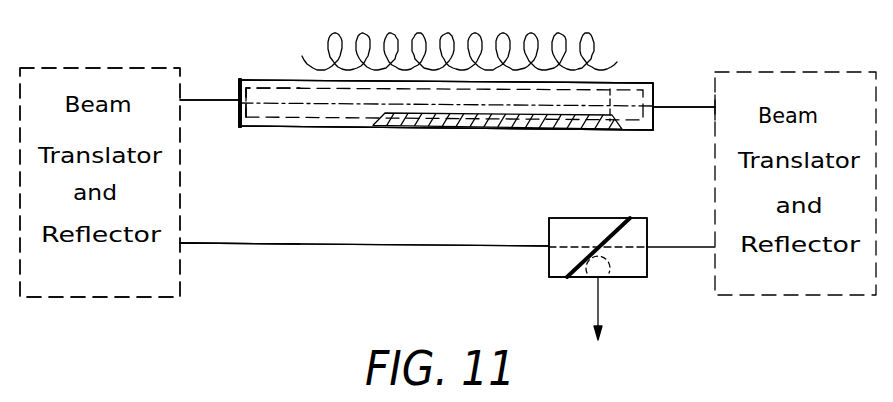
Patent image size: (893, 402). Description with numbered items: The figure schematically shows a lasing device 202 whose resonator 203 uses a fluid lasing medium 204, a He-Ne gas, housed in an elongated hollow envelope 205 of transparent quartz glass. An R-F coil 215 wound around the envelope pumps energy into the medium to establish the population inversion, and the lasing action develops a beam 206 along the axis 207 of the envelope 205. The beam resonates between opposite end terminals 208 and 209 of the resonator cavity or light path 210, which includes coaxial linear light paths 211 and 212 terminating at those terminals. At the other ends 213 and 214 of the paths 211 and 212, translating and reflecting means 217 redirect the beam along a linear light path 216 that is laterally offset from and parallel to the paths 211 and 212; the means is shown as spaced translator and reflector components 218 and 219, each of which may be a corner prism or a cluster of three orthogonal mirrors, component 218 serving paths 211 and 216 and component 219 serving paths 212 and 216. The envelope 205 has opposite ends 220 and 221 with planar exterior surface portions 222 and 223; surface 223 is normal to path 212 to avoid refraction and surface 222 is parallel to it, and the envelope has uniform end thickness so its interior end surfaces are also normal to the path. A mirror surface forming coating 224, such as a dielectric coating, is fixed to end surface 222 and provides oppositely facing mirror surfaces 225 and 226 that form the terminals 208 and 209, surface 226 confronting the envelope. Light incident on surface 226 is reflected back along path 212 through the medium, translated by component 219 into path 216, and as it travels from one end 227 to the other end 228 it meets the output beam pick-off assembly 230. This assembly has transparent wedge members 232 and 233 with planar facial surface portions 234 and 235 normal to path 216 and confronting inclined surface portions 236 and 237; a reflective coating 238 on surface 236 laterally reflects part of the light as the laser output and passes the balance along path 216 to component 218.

The lasing device 202 is at (758, 30).
The resonator 203 is at (678, 54).
The fluid lasing medium 204 is at (500, 126).
The elongated hollow envelope 205 is at (336, 128).
The beam 206 is at (665, 110).
The axis of the envelope 207 is at (610, 96).
The end terminal 208 is at (238, 122).
The end terminal 209 is at (444, 103).
The resonator cavity or light path 210 is at (380, 244).
The linear light path 211 is at (190, 100).
The linear light path 212 is at (710, 110).
The other end of light path 213 is at (181, 98).
The other end of light path 214 is at (717, 106).
The R-F coil 215 is at (498, 38).
The linear light path 216 is at (287, 244).
The translating and reflecting means 217 is at (90, 297).
The translator and reflector component 218 is at (42, 68).
The translator and reflector component 219 is at (806, 72).
The envelope end 220 is at (244, 124).
The envelope end 221 is at (653, 132).
The planar exterior end surface 222 is at (243, 128).
The planar exterior end surface 223 is at (655, 98).
The mirror surface forming coating 224 is at (238, 128).
The mirror surface 225 is at (238, 98).
The mirror surface 226 is at (246, 84).
The end of light path 227 is at (712, 250).
The end of light path 228 is at (183, 243).
The output beam pick-off assembly 230 is at (600, 218).
The transparent wedge member 232 is at (549, 218).
The transparent wedge member 233 is at (628, 279).
The planar facial surface portion 234 is at (549, 262).
The planar facial surface portion 235 is at (648, 224).
The confronting planar surface portion 236 is at (597, 279).
The confronting planar surface portion 237 is at (597, 247).
The reflective coating 238 is at (598, 262).